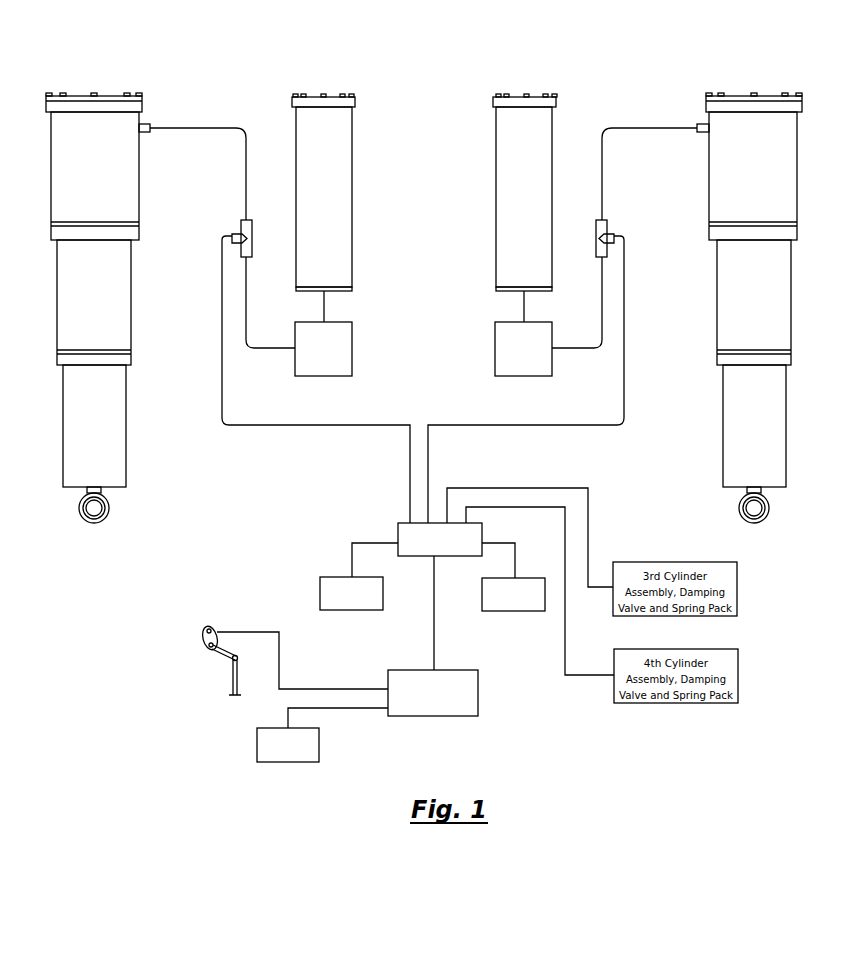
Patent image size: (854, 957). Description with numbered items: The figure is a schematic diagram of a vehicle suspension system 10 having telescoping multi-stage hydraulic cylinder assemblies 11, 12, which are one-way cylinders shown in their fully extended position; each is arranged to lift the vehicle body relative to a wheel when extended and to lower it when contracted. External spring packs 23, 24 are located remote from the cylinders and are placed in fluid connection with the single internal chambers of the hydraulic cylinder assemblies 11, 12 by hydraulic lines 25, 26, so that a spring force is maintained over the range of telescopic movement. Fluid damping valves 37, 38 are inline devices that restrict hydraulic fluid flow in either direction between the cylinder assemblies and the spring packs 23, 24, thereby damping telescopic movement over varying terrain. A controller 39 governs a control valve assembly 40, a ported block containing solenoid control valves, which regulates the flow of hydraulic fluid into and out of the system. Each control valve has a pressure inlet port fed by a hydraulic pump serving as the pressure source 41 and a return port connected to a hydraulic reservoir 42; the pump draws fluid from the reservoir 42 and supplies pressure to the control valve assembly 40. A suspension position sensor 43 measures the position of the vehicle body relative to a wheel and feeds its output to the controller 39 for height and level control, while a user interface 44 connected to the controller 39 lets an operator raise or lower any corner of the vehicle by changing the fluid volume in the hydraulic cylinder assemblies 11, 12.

The vehicle suspension system 10 is at (219, 13).
The telescoping multi-stage hydraulic cylinder assembly 11 is at (80, 116).
The telescoping multi-stage hydraulic cylinder assembly 12 is at (735, 121).
The external spring pack 23 is at (334, 116).
The external spring pack 24 is at (515, 114).
The hydraulic line 25 is at (217, 124).
The hydraulic line 26 is at (636, 125).
The fluid damping valve 37 is at (352, 337).
The fluid damping valve 38 is at (495, 338).
The controller 39 is at (472, 700).
The control valve assembly 40 is at (405, 528).
The pressure source 41 is at (320, 581).
The hydraulic reservoir 42 is at (505, 608).
The suspension position sensor 43 is at (205, 630).
The user interface 44 is at (258, 740).